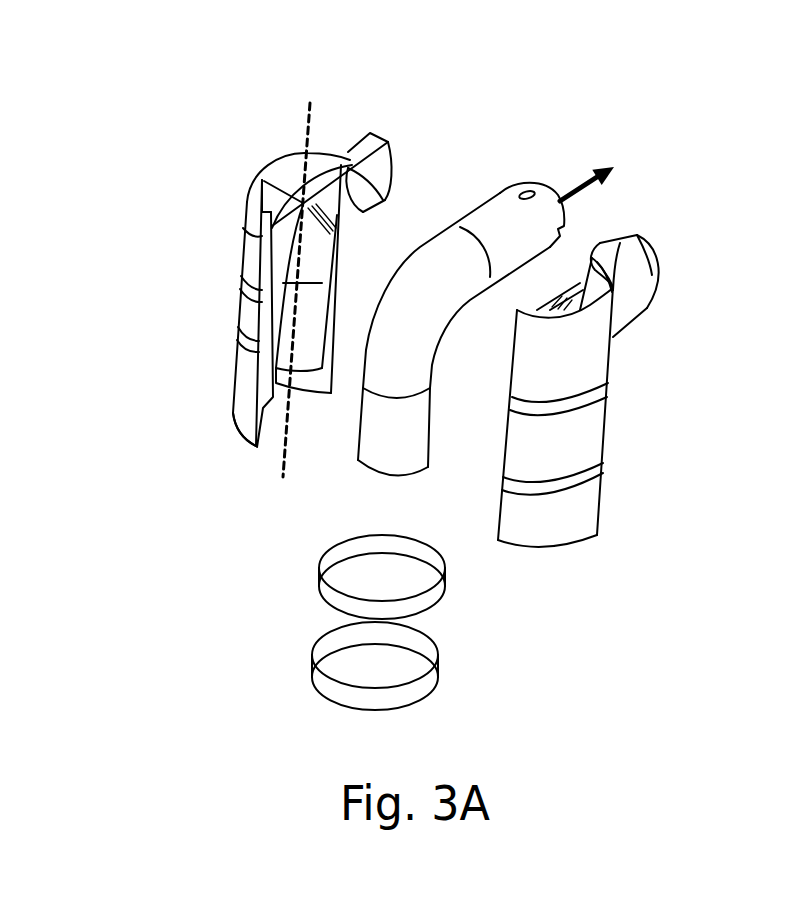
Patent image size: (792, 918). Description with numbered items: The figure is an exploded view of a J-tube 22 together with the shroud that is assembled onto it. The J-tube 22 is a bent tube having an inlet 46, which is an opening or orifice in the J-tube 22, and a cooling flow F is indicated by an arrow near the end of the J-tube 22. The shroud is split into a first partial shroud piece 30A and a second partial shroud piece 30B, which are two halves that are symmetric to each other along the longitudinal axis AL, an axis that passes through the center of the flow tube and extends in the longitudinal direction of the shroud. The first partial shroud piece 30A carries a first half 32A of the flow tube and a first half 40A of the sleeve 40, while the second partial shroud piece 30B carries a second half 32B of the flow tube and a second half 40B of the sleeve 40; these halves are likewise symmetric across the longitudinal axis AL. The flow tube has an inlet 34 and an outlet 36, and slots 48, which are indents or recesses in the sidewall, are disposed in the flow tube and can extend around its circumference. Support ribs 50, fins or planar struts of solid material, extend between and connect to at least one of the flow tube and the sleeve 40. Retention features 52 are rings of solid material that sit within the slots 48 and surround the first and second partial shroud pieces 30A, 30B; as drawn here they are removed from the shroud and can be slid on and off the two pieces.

The J-tube 22 is at (461, 320).
The first partial shroud piece 30A is at (260, 336).
The second partial shroud piece 30B is at (612, 451).
The first half of flow tube 32A is at (236, 347).
The second half of flow tube 32B is at (588, 430).
The inlet 34 is at (652, 275).
The outlet 36 is at (237, 432).
The sleeve 40 is at (547, 200).
The first half of sleeve 40A is at (344, 160).
The second half of sleeve 40B is at (671, 260).
The inlet 46 is at (406, 482).
The slots 48 is at (247, 282).
The support ribs 50 is at (287, 163).
The retention features 52 is at (320, 563).
The longitudinal axis AL is at (305, 121).
The cooling flow F is at (600, 178).